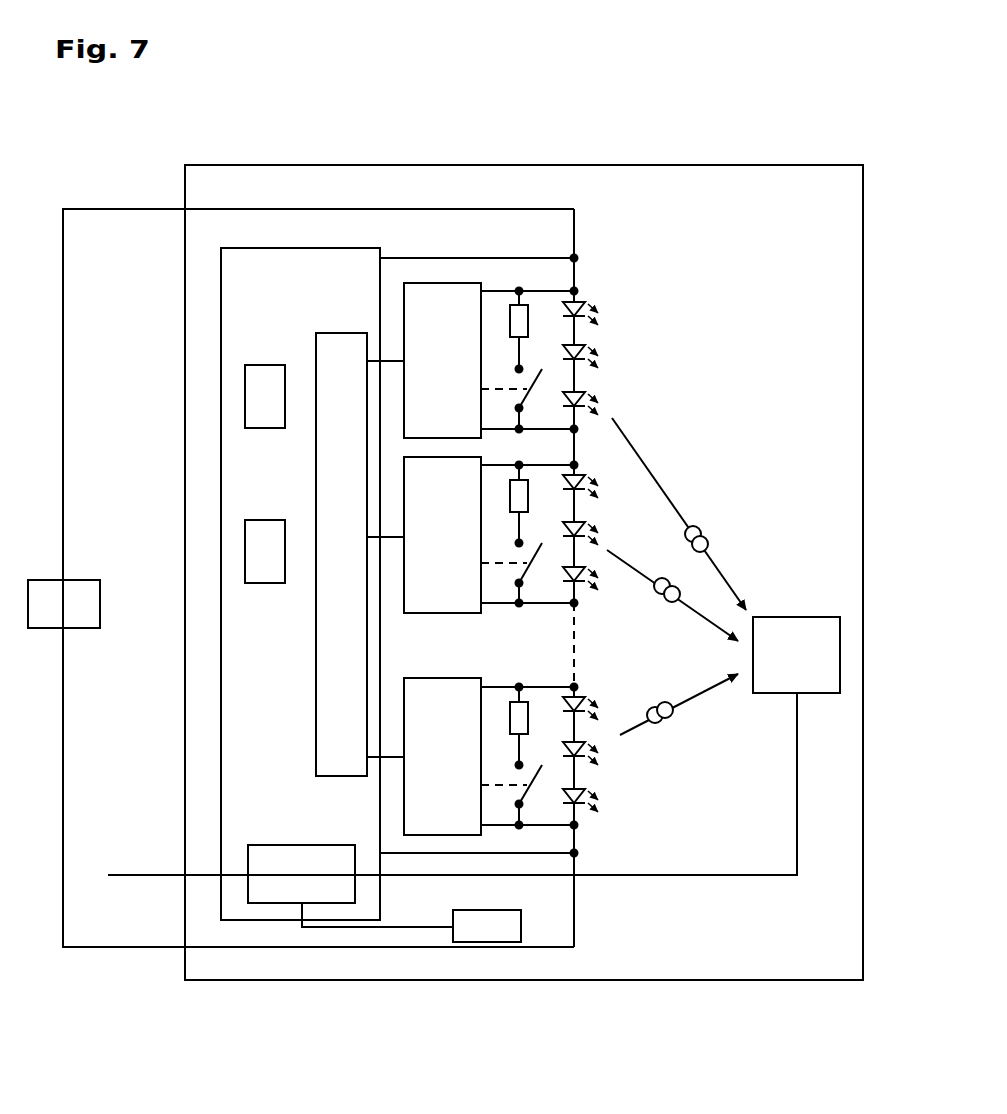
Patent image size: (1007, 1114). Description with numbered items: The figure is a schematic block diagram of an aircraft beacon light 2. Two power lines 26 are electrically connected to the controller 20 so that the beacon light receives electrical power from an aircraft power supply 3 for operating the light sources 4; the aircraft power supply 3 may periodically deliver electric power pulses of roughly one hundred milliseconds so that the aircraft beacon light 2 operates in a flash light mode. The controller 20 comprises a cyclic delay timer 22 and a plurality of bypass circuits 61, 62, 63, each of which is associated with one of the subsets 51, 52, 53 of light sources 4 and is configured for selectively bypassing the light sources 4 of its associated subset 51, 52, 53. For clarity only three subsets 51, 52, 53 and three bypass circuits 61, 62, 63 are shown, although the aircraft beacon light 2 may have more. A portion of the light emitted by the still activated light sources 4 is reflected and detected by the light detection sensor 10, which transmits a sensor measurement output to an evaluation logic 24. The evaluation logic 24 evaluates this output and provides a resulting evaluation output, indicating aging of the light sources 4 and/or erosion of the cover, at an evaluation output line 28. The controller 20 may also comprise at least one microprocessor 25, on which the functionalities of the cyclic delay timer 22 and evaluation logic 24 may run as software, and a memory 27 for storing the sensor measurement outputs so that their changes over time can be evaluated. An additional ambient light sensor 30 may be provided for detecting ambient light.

The aircraft beacon light 2 is at (796, 142).
The aircraft power supply 3 is at (78, 592).
The light sources 4 is at (596, 290).
The light detection sensor 10 is at (803, 638).
The controller 20 is at (237, 297).
The cyclic delay timer 22 is at (335, 358).
The evaluation logic 24 is at (275, 862).
The microprocessor 25 is at (262, 410).
The power lines 26 is at (102, 209).
The memory 27 is at (262, 560).
The evaluation output line 28 is at (138, 875).
The ambient light sensor 30 is at (487, 928).
The first subset of light sources 51 is at (653, 328).
The second subset of light sources 52 is at (621, 522).
The third subset of light sources 53 is at (636, 752).
The first bypass circuit 61 is at (493, 280).
The second bypass circuit 62 is at (496, 619).
The third bypass circuit 63 is at (499, 670).